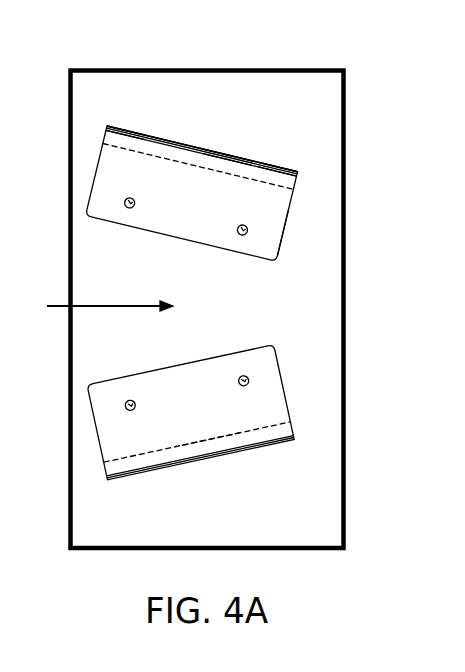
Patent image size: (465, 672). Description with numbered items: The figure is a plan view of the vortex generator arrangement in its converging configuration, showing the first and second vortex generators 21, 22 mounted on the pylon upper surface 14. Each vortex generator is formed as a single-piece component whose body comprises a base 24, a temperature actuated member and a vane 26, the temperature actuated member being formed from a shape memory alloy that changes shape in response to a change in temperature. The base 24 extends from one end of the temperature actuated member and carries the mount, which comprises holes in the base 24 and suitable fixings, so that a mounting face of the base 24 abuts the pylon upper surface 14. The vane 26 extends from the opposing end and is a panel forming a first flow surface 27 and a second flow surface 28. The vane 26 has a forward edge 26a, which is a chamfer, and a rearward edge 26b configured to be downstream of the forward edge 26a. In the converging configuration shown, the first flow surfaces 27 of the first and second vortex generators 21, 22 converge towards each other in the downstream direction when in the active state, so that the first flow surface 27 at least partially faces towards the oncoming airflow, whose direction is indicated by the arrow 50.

The pylon upper surface 14 is at (323, 145).
The first vortex generator 21 is at (110, 168).
The second vortex generator 22 is at (273, 402).
The base 24 is at (265, 247).
The vane 26 is at (175, 145).
The forward edge 26a is at (145, 133).
The rearward edge 26b is at (298, 172).
The first flow surface 27 is at (225, 155).
The second flow surface 28 is at (230, 152).
The arrow 50 is at (83, 303).